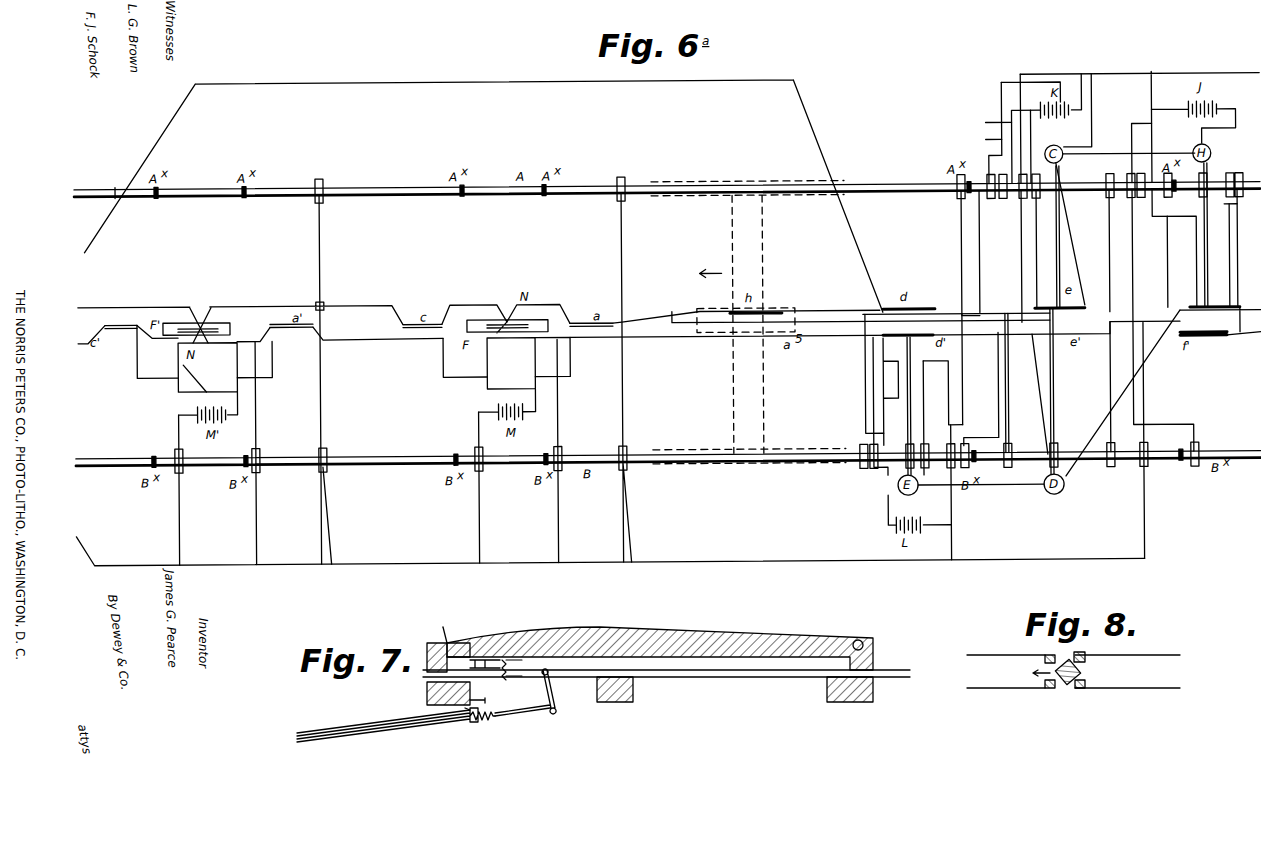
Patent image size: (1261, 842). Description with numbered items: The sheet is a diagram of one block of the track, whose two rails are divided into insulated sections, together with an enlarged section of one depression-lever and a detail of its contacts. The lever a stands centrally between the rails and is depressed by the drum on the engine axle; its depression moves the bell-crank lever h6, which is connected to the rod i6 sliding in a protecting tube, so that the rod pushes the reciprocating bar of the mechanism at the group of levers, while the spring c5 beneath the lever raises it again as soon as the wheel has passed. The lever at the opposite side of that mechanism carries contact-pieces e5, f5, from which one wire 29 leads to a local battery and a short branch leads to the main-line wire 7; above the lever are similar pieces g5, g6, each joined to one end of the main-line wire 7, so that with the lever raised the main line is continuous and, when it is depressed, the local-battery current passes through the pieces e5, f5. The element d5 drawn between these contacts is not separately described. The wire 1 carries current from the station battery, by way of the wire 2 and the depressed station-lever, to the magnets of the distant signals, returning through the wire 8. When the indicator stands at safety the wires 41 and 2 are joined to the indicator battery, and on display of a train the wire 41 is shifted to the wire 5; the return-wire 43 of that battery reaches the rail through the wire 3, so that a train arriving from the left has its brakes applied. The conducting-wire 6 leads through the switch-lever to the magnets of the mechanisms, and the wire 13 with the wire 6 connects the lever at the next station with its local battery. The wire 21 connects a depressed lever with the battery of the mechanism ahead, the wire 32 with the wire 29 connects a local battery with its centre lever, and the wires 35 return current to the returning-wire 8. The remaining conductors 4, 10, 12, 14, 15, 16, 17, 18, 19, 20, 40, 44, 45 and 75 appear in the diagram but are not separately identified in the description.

In FIG. 6A, the wire 1 is at (394, 86).
In FIG. 6A, the wire 2 is at (883, 383).
In FIG. 6A, the wire 3 is at (962, 385).
In FIG. 6A, the circuit wire 4 is at (865, 406).
In FIG. 6A, the wire 5 is at (925, 420).
In FIG. 6A, the conducting-wire 6 is at (628, 328).
In FIG. 6A, the main-line wire 7 is at (110, 306).
In FIG. 7, the main-line wire 7 is at (450, 640).
In FIG. 8, the main-line wire 7 is at (1073, 672).
In FIG. 6A, the returning-wire 8 is at (1143, 500).
In FIG. 6A, the circuit wire 10 is at (985, 275).
In FIG. 6A, the circuit wire 12 is at (1037, 252).
In FIG. 6A, the wire 13 is at (1078, 262).
In FIG. 6A, the circuit wire 14 is at (990, 122).
In FIG. 6A, the circuit wire 15 is at (1106, 423).
In FIG. 6A, the circuit wire 16 is at (998, 410).
In FIG. 6A, the circuit wire 17 is at (980, 260).
In FIG. 6A, the circuit wire 18 is at (1168, 274).
In FIG. 6A, the circuit wire 19 is at (1110, 240).
In FIG. 6A, the circuit wire 20 is at (1008, 388).
In FIG. 6A, the wire 21 is at (356, 393).
In FIG. 6A, the wire 29 is at (137, 366).
In FIG. 8, the wire 29 is at (1006, 696).
In FIG. 6A, the wire 32 is at (356, 365).
In FIG. 6A, the wire 35 is at (255, 445).
In FIG. 6A, the circuit wire 40 is at (985, 139).
In FIG. 6A, the wire 41 is at (887, 513).
In FIG. 6A, the return-wire 43 is at (950, 388).
In FIG. 6A, the circuit wire 44 is at (178, 525).
In FIG. 6A, the circuit wire 45 is at (320, 422).
In FIG. 6A, the circuit wire 75 is at (1040, 410).
In FIG. 7, the depression-lever a is at (600, 630).
In FIG. 7, the contact block d5 is at (472, 645).
In FIG. 8, the contact block d5 is at (1080, 672).
In FIG. 7, the contact-piece e5 is at (423, 673).
In FIG. 8, the contact-piece e5 is at (1085, 693).
In FIG. 7, the contact-piece f5 is at (496, 663).
In FIG. 8, the contact-piece f5 is at (1049, 688).
In FIG. 8, the contact-piece g5 is at (1082, 656).
In FIG. 8, the contact-piece g6 is at (1048, 656).
In FIG. 7, the spring c5 is at (476, 684).
In FIG. 7, the bell-crank lever h6 is at (552, 698).
In FIG. 7, the rod i6 is at (365, 734).